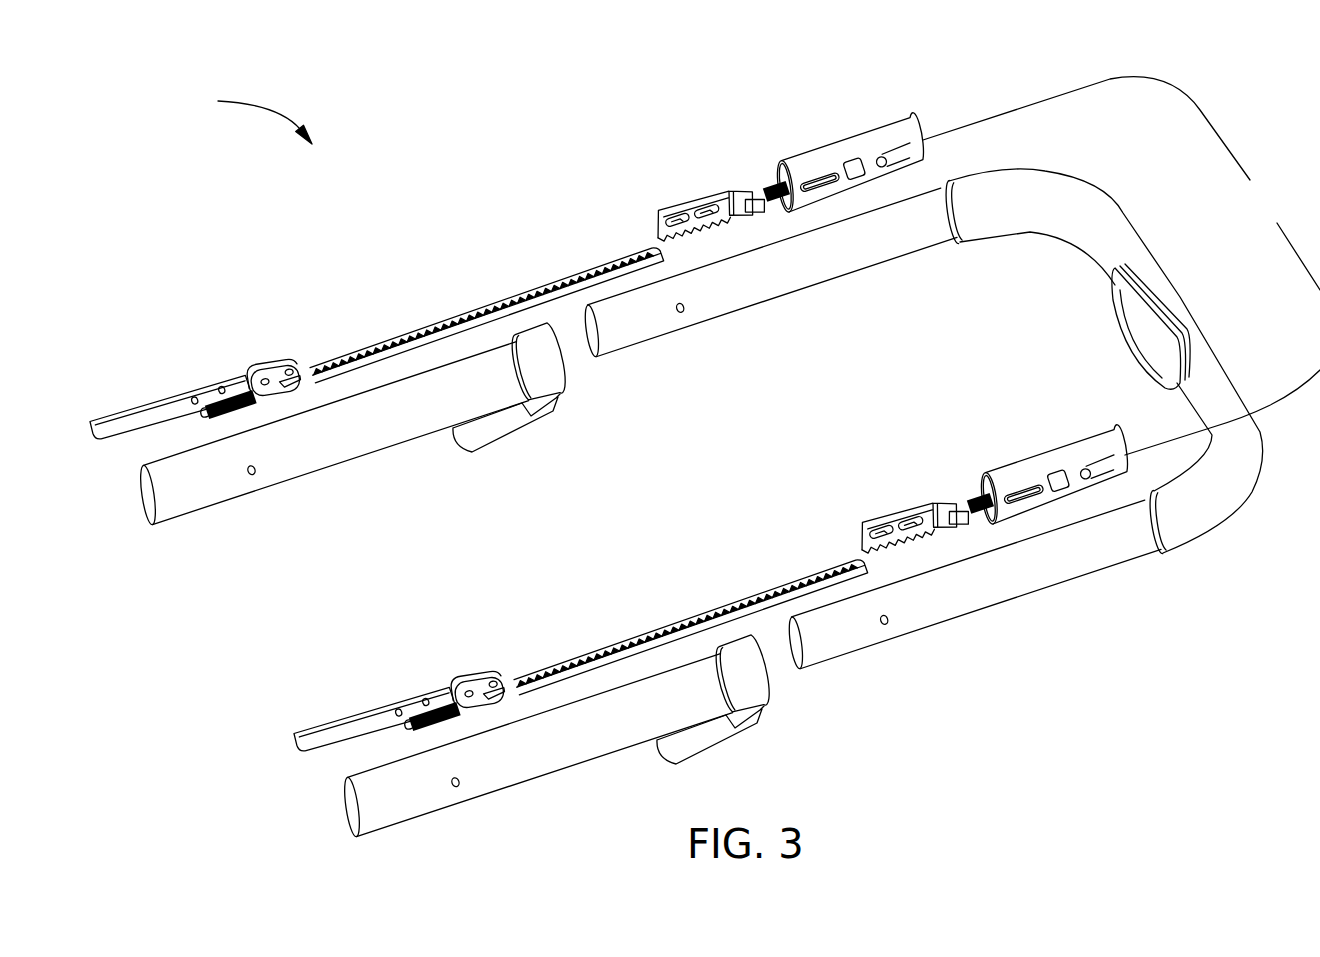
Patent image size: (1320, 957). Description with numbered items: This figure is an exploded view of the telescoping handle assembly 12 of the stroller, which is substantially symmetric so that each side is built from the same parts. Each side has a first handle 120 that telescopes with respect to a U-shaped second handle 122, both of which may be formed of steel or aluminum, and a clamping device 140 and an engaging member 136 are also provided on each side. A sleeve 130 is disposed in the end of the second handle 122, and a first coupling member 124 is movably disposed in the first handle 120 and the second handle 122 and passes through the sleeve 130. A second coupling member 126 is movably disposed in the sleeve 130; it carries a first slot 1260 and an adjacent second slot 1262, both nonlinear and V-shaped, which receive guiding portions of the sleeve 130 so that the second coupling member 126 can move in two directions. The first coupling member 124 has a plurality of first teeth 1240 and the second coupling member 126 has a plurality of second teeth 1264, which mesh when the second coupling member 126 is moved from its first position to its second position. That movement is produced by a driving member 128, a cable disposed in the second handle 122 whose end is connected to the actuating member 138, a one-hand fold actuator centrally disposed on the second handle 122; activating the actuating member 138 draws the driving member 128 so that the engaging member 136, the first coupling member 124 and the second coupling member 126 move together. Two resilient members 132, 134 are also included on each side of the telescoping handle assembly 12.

The telescoping handle assembly 12 is at (247, 118).
The first handle 120 is at (327, 453).
The second handle 122 is at (806, 262).
The first coupling member 124 is at (528, 292).
The first teeth 1240 is at (425, 317).
The second coupling member 126 is at (654, 215).
The first slot 1260 is at (701, 205).
The second slot 1262 is at (666, 210).
The second teeth 1264 is at (706, 228).
The driving member 128 is at (975, 122).
The sleeve 130 is at (850, 145).
The resilient member 132 is at (780, 186).
The resilient member 134 is at (246, 378).
The engaging member 136 is at (135, 417).
The actuating member 138 is at (1133, 329).
The clamping device 140 is at (502, 425).